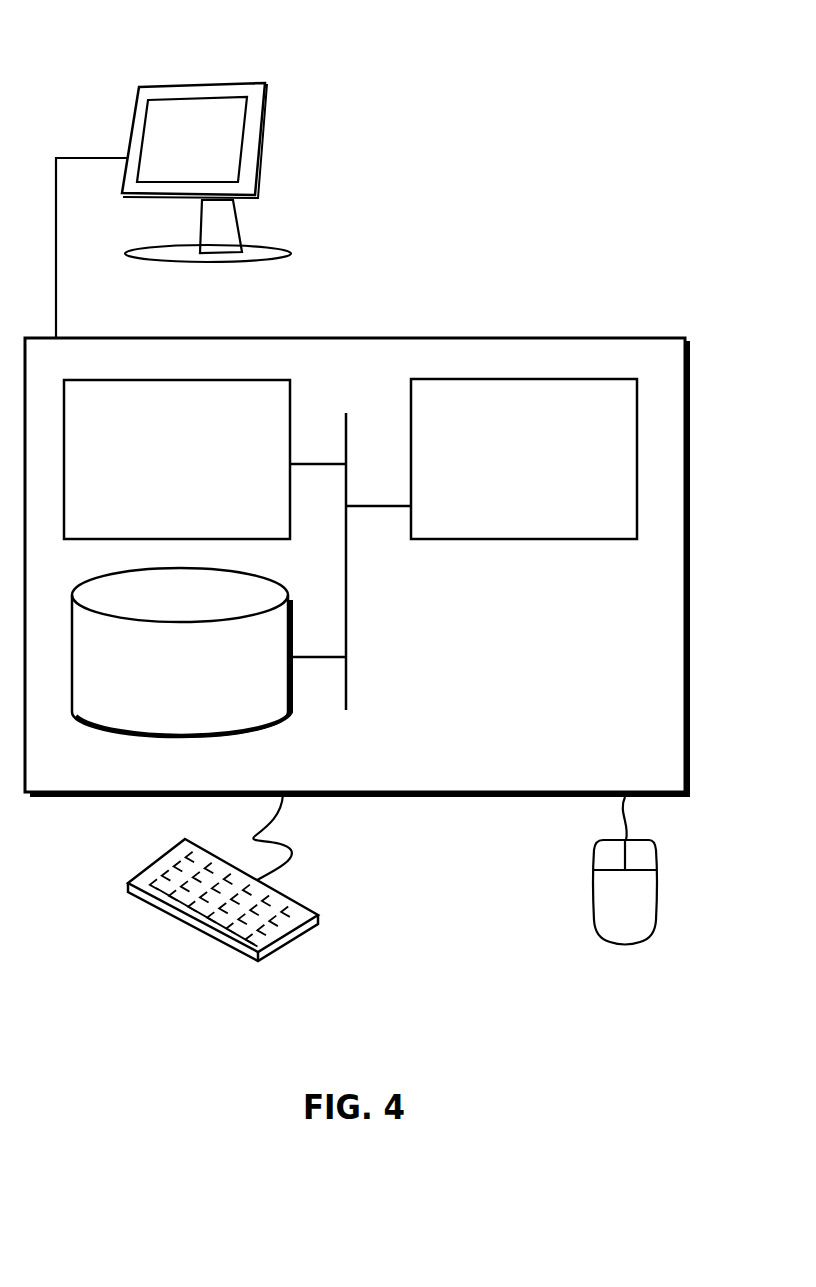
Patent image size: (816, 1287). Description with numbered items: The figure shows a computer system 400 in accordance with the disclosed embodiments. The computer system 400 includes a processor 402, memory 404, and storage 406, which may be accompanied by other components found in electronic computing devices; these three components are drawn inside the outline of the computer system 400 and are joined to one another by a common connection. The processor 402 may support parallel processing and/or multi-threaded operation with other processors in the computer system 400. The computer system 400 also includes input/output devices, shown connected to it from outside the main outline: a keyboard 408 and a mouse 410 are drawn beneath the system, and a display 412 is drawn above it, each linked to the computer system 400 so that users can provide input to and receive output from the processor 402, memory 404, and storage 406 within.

The computer system 400 is at (401, 315).
The processor 402 is at (549, 471).
The memory 404 is at (198, 471).
The storage 406 is at (206, 681).
The keyboard 408 is at (145, 902).
The mouse 410 is at (645, 914).
The display 412 is at (173, 210).